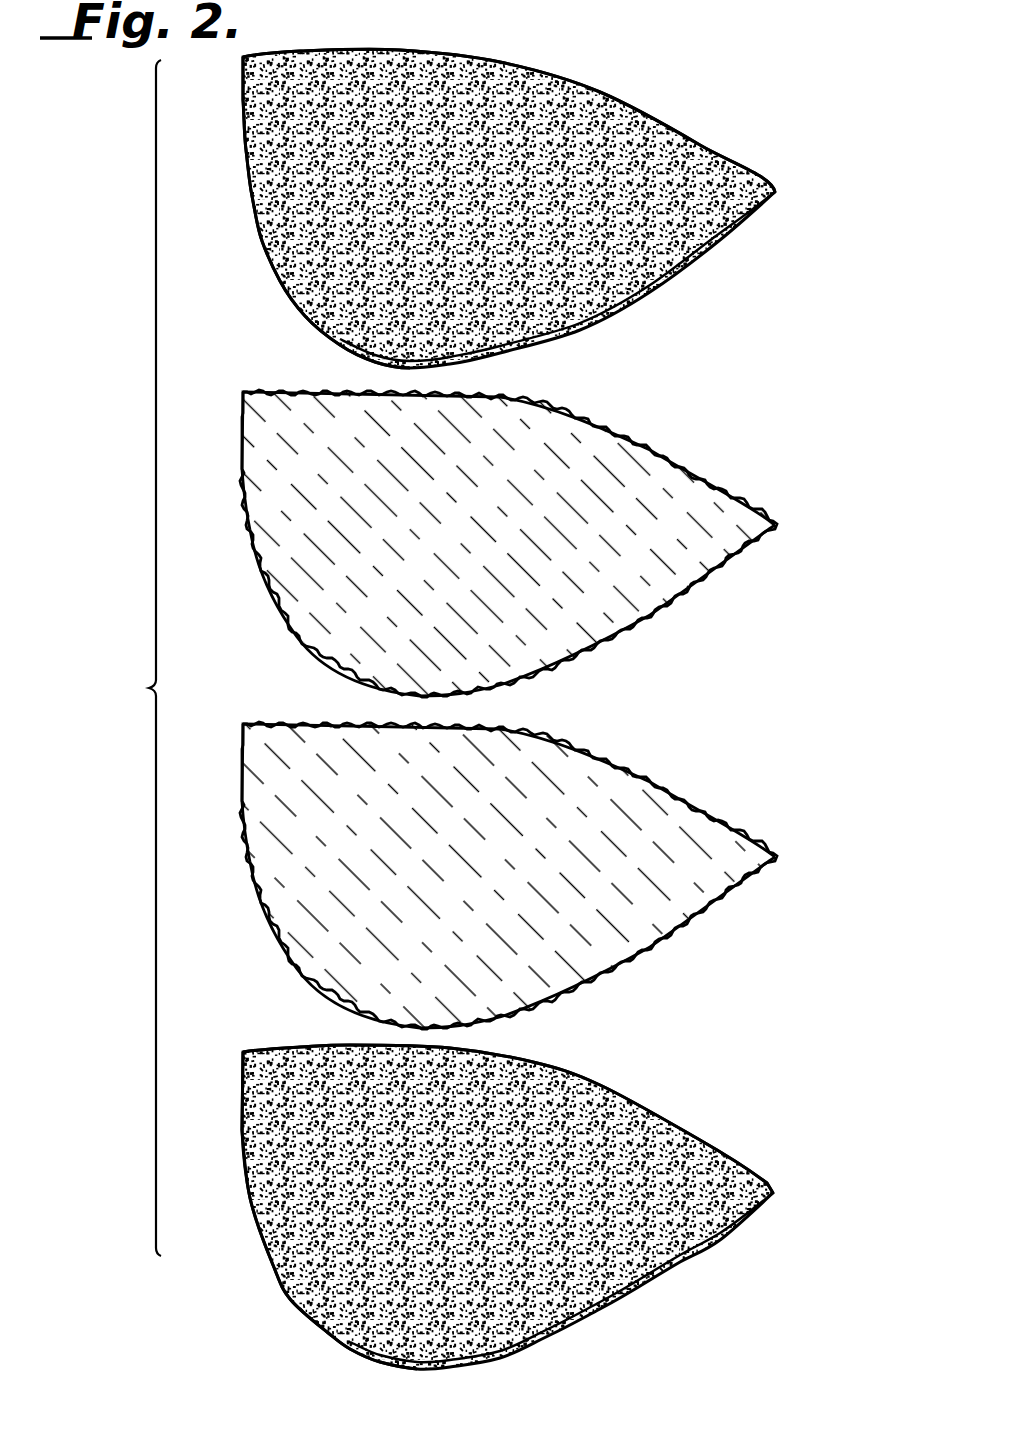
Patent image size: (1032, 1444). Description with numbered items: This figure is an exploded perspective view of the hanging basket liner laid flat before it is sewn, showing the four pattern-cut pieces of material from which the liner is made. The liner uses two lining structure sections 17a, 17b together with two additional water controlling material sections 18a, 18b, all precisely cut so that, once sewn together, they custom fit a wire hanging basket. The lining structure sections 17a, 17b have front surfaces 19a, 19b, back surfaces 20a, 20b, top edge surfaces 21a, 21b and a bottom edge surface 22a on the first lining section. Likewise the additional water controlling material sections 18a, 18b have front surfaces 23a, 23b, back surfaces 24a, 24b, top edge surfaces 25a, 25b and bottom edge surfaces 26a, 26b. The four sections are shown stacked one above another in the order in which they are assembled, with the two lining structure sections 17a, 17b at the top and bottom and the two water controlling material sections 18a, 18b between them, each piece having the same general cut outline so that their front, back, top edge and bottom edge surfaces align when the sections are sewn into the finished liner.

The lining structure section 17a is at (745, 163).
The lining structure section 17b is at (763, 1167).
The additional water controlling material section 18a is at (757, 502).
The additional water controlling material section 18b is at (747, 832).
The front surface 19a is at (243, 88).
The front surface 19b is at (300, 1303).
The back surface 20a is at (296, 307).
The back surface 20b is at (245, 1085).
The top edge surface 21a is at (648, 112).
The top edge surface 21b is at (673, 1122).
The bottom edge surface 22a is at (702, 250).
The front surface 23a is at (245, 427).
The front surface 23b is at (297, 973).
The back surface 24a is at (297, 640).
The back surface 24b is at (257, 760).
The top edge surface 25a is at (647, 450).
The top edge surface 25b is at (645, 780).
The bottom edge surface 26a is at (705, 576).
The bottom edge surface 26b is at (705, 909).